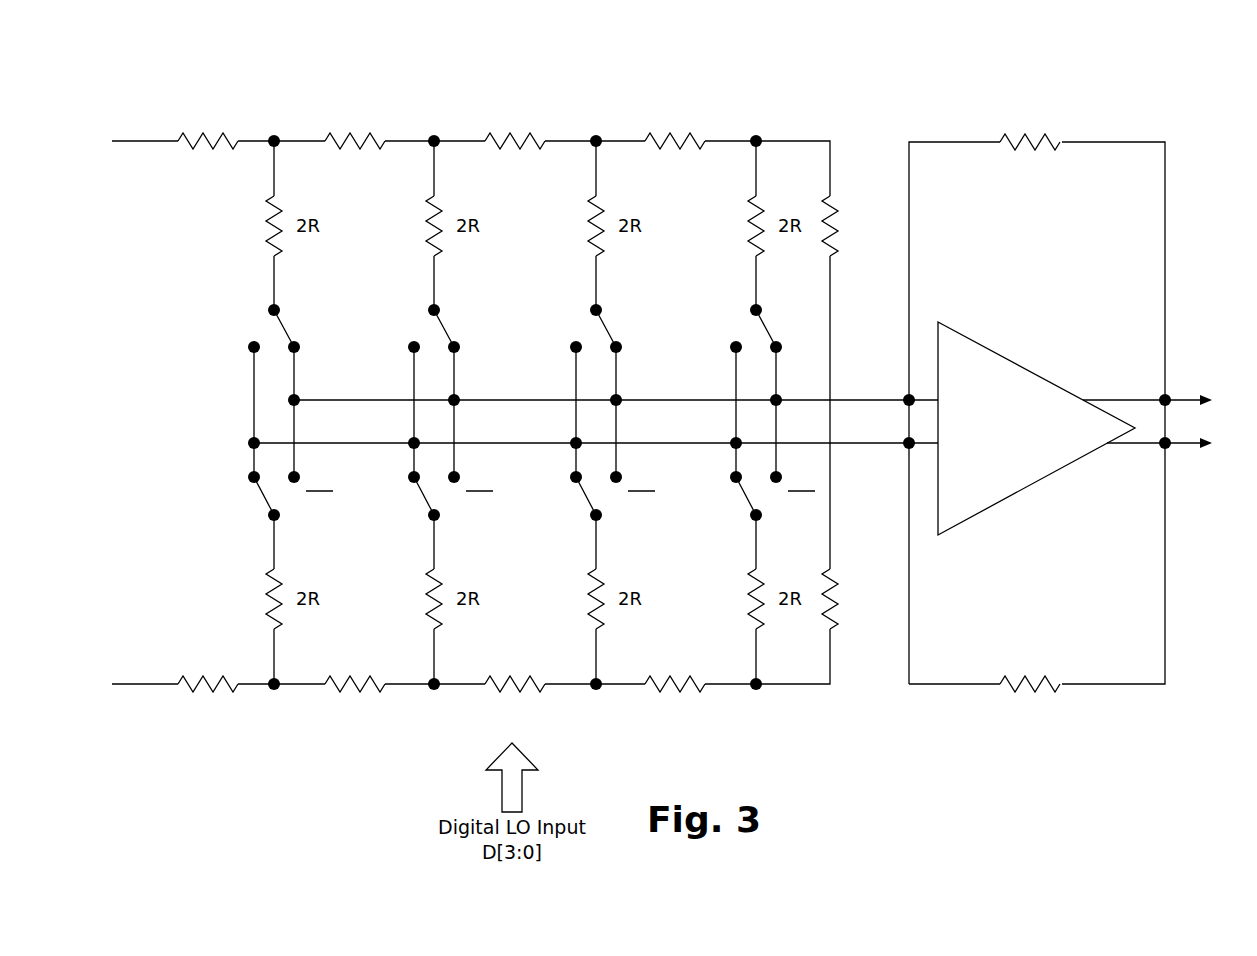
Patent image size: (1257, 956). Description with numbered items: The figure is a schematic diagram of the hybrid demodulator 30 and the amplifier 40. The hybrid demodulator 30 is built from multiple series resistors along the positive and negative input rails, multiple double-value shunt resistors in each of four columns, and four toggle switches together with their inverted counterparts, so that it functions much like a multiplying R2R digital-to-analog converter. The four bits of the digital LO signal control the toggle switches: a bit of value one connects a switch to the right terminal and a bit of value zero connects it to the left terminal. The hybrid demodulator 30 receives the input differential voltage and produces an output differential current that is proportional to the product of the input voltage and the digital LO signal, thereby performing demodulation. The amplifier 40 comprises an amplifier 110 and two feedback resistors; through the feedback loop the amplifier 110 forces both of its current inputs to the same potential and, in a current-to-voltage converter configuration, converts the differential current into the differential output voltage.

The hybrid demodulator 30 is at (589, 78).
The amplifier 40 is at (1084, 78).
The amplifier 110 is at (1032, 370).